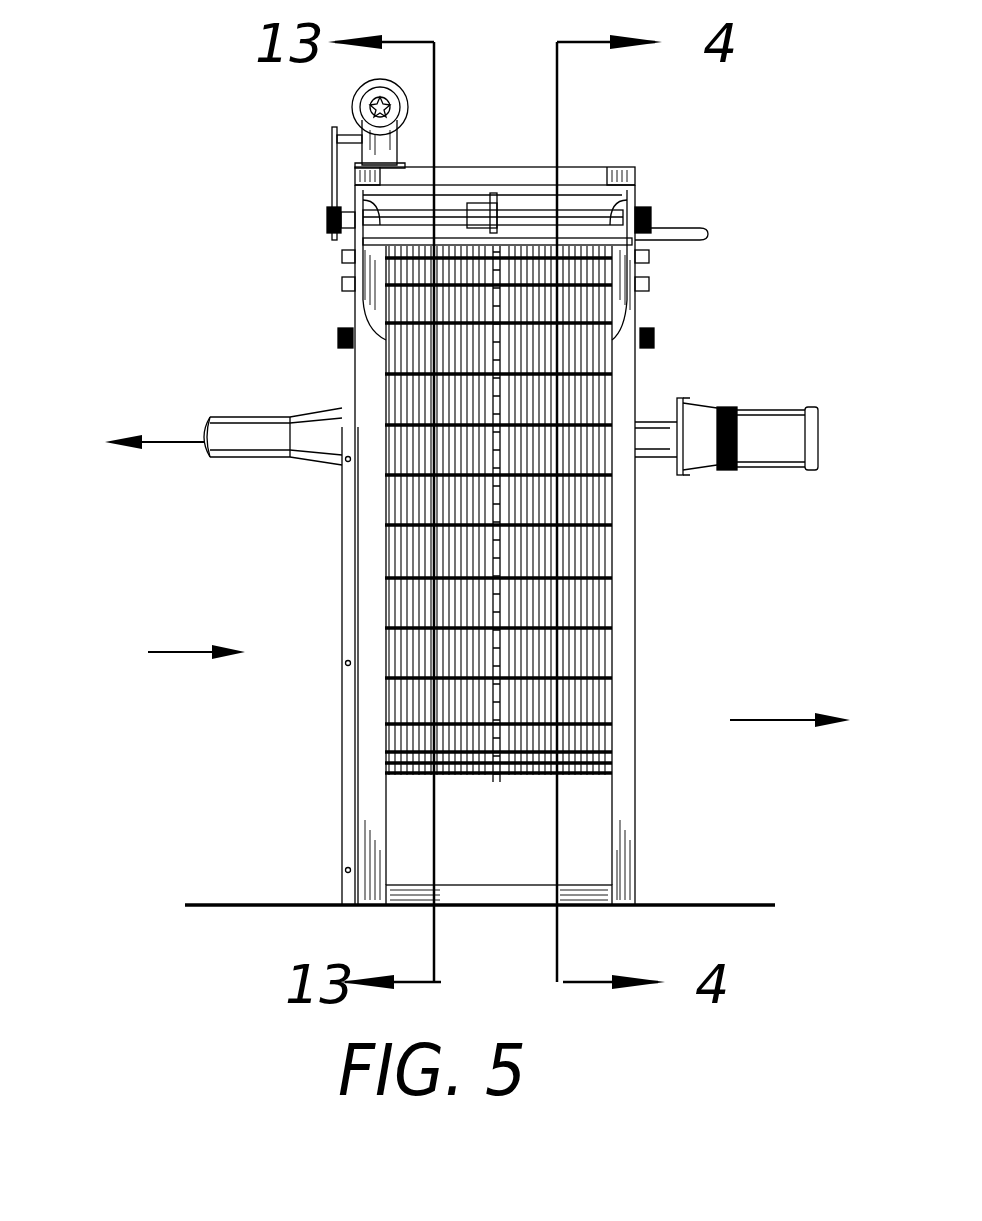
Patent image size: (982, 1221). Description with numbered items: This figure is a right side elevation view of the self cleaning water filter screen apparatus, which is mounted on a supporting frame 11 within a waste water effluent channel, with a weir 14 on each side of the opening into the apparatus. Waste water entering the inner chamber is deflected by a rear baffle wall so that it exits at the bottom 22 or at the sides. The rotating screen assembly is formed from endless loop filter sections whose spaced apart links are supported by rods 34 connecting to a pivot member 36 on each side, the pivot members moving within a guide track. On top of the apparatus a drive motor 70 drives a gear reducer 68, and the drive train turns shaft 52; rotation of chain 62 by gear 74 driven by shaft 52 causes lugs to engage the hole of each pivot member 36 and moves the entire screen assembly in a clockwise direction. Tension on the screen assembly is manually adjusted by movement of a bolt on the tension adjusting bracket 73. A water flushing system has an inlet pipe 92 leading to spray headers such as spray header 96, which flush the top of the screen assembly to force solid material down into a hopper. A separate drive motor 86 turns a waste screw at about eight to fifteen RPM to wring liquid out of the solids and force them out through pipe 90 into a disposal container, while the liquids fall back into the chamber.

The supporting frame 11 is at (535, 182).
The weir 14 is at (340, 524).
The bottom 22 is at (450, 780).
The rods 34 is at (613, 525).
The pivot member 36 is at (640, 303).
The shaft 52 is at (575, 215).
The chain 62 is at (332, 176).
The gear reducer 68 is at (355, 130).
The drive motor 70 is at (356, 97).
The tension adjusting bracket 73 is at (344, 286).
The drive gear 74 is at (372, 205).
The drive motor 86 is at (757, 468).
The pipe 90 is at (222, 415).
The inlet pipe 92 is at (700, 232).
The spray header 96 is at (370, 250).